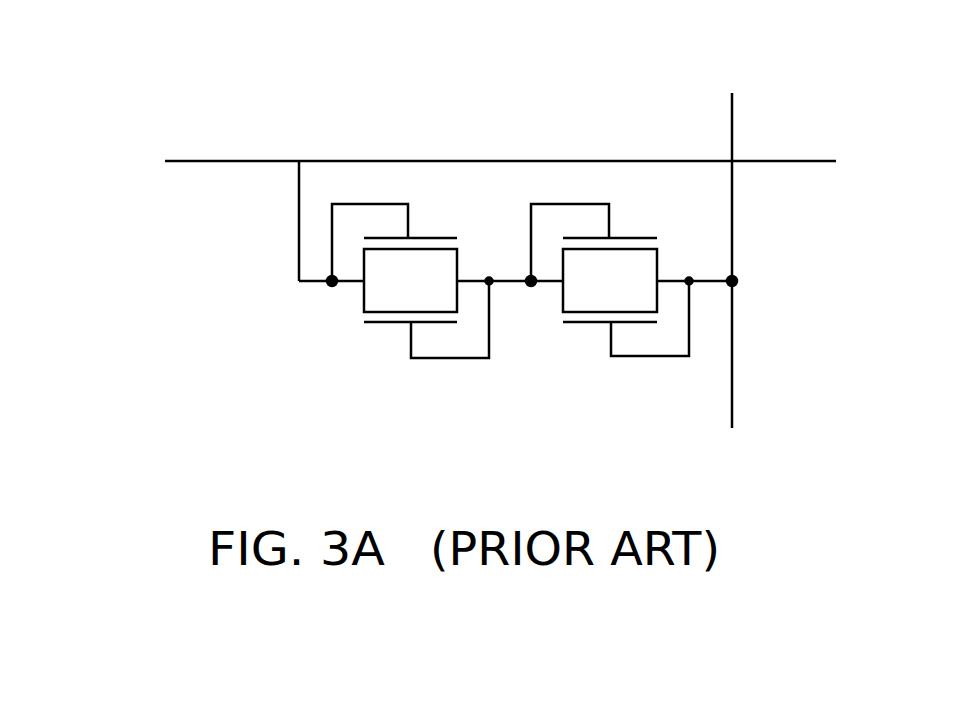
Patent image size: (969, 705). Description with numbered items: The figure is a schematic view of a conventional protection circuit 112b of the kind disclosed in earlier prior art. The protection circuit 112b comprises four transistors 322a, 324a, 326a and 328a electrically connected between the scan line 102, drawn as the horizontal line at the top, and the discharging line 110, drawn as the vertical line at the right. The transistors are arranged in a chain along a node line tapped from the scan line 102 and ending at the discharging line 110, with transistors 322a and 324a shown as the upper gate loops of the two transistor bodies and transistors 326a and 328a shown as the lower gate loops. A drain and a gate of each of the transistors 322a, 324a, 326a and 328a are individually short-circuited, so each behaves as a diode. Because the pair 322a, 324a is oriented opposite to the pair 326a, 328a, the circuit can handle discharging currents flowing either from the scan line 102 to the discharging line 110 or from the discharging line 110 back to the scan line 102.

The protection circuit 112b is at (117, 33).
The scan line 102 is at (228, 163).
The discharging line 110 is at (733, 403).
The transistor 322a is at (385, 233).
The transistor 324a is at (583, 233).
The transistor 326a is at (433, 325).
The transistor 328a is at (632, 323).